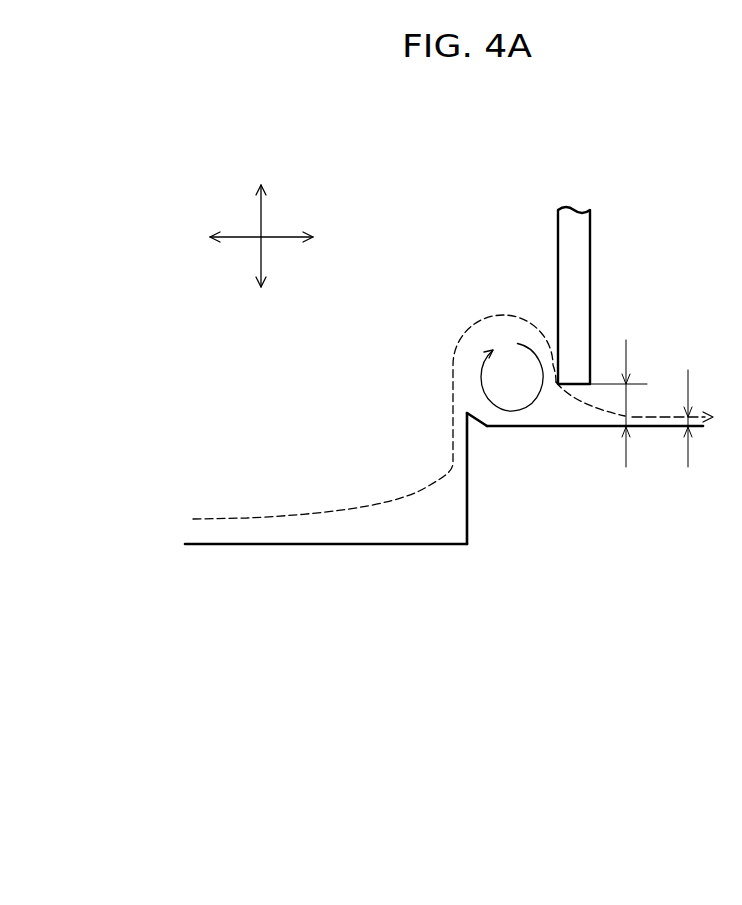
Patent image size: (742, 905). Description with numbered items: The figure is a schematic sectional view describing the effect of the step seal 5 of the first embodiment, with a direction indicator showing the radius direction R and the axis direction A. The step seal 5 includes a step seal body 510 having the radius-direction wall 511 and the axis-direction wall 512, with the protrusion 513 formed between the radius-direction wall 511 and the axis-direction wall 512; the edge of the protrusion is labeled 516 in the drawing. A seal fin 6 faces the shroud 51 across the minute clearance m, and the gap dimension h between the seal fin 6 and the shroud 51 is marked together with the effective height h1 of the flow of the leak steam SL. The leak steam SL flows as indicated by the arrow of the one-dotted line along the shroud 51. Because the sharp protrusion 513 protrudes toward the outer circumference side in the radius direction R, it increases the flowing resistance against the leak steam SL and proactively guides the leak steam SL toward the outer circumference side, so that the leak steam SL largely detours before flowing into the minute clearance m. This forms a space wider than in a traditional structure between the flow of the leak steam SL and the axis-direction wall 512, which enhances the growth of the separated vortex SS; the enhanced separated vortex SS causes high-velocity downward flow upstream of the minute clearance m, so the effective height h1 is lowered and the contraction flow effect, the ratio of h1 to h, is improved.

The step seal 5 is at (406, 508).
The shroud 51 is at (406, 508).
The step seal body 510 is at (630, 522).
The radius-direction wall 511 is at (467, 500).
The axis-direction wall 512 is at (508, 427).
The protrusion 513 is at (467, 422).
The edge portion 516 is at (467, 414).
The seal fin 6 is at (586, 241).
The minute clearance m is at (584, 393).
The gap dimension h is at (603, 403).
The effective height h1 is at (702, 418).
The separated vortex SS is at (479, 379).
The leak steam SL is at (253, 519).
The radius direction R is at (261, 221).
The axial direction A is at (273, 240).